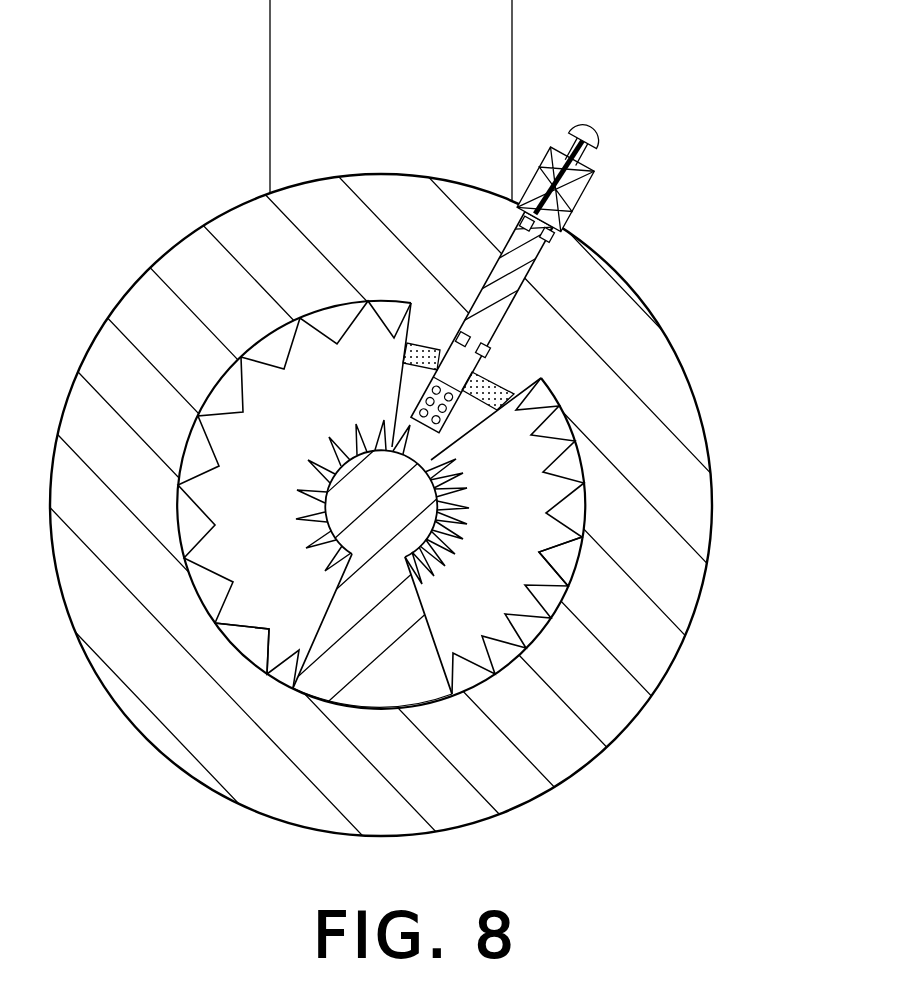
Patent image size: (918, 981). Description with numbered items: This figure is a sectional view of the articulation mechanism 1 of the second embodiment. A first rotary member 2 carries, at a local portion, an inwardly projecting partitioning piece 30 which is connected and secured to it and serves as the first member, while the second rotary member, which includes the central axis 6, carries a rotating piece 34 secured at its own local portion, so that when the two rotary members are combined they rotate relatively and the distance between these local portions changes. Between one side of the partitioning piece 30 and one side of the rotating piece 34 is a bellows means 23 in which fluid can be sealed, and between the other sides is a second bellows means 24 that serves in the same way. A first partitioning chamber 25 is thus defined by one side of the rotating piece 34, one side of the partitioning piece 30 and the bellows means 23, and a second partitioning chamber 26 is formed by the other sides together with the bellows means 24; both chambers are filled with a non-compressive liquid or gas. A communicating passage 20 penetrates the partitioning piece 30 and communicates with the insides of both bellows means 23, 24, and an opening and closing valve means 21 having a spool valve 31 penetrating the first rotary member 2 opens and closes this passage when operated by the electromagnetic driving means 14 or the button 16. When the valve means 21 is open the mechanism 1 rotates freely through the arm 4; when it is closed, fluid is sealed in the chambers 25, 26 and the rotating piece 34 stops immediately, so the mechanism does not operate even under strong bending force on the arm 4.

The articulation mechanism 1 is at (690, 193).
The first rotary member 2 is at (640, 347).
The arm 4 is at (486, 12).
The central axis 6 is at (418, 533).
The electromagnetic driving means 14 is at (594, 188).
The button 16 is at (592, 122).
The communicating passage 20 is at (433, 347).
The opening and closing valve means 21 is at (528, 293).
The bellows means 23 is at (563, 424).
The bellows means 24 is at (316, 330).
The first partitioning chamber 25 is at (533, 533).
The second partitioning chamber 26 is at (253, 610).
The partitioning piece 30 is at (512, 372).
The spool valve 31 is at (500, 260).
The rotating piece 34 is at (410, 697).